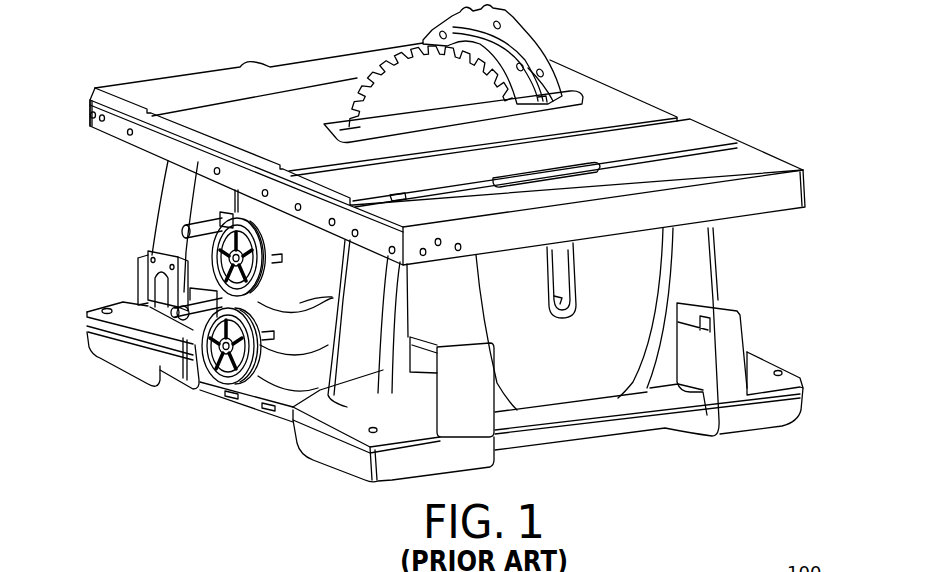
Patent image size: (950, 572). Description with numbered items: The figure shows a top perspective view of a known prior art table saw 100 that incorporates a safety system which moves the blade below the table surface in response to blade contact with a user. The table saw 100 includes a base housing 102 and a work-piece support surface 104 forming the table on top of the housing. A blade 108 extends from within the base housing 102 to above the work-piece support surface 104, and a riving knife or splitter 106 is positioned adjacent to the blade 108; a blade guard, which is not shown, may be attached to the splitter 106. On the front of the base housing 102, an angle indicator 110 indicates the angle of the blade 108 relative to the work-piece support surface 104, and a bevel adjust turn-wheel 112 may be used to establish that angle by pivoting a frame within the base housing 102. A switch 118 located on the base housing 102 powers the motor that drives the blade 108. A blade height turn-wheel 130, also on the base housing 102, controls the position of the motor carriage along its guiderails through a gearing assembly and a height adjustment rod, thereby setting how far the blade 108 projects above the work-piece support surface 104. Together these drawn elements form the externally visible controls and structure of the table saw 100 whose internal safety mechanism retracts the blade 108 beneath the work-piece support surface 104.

The table saw 100 is at (757, 80).
The base housing 102 is at (720, 258).
The work-piece support surface 104 is at (721, 134).
The riving knife or splitter 106 is at (536, 34).
The blade 108 is at (383, 66).
The angle indicator 110 is at (215, 290).
The bevel adjust turn-wheel 112 is at (213, 243).
The switch 118 is at (148, 270).
The blade height turn-wheel 130 is at (210, 384).